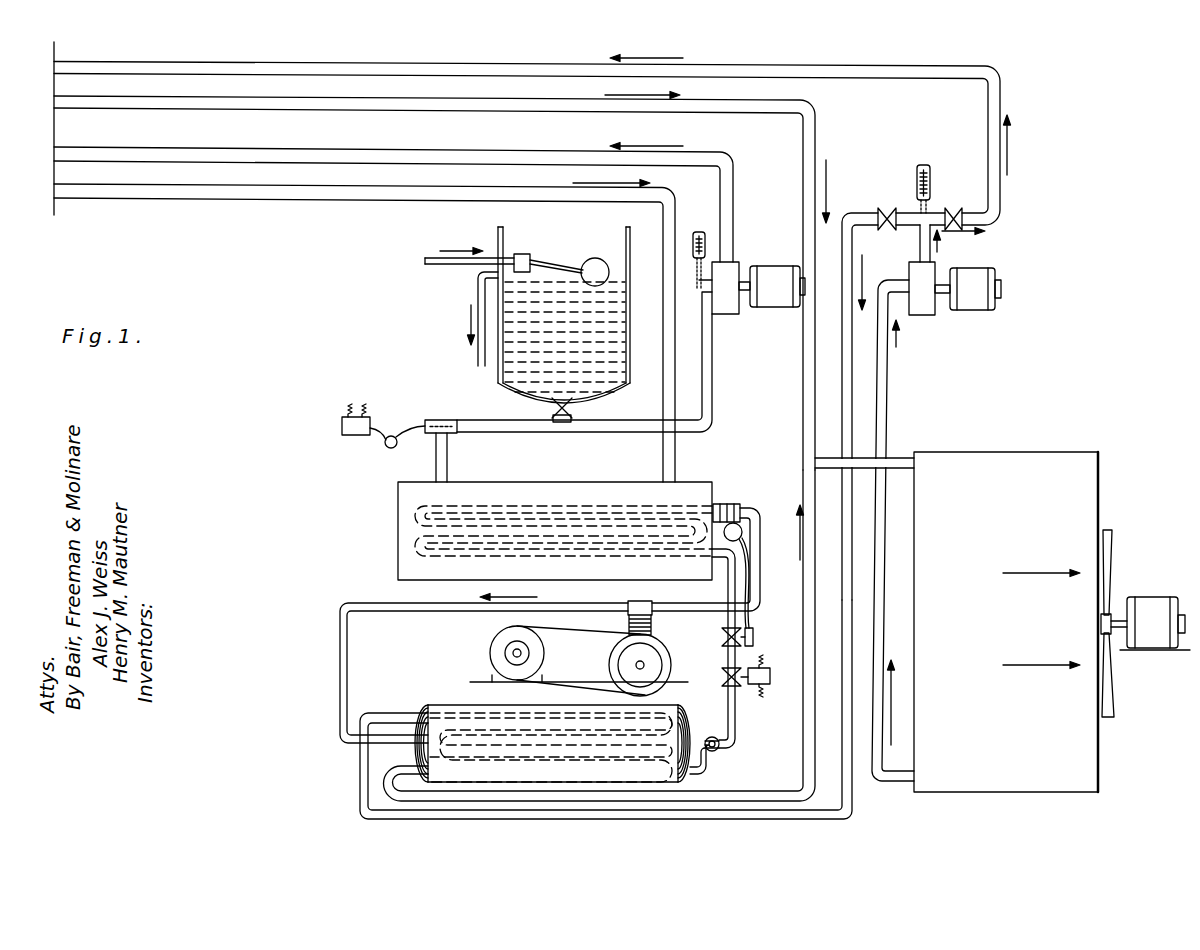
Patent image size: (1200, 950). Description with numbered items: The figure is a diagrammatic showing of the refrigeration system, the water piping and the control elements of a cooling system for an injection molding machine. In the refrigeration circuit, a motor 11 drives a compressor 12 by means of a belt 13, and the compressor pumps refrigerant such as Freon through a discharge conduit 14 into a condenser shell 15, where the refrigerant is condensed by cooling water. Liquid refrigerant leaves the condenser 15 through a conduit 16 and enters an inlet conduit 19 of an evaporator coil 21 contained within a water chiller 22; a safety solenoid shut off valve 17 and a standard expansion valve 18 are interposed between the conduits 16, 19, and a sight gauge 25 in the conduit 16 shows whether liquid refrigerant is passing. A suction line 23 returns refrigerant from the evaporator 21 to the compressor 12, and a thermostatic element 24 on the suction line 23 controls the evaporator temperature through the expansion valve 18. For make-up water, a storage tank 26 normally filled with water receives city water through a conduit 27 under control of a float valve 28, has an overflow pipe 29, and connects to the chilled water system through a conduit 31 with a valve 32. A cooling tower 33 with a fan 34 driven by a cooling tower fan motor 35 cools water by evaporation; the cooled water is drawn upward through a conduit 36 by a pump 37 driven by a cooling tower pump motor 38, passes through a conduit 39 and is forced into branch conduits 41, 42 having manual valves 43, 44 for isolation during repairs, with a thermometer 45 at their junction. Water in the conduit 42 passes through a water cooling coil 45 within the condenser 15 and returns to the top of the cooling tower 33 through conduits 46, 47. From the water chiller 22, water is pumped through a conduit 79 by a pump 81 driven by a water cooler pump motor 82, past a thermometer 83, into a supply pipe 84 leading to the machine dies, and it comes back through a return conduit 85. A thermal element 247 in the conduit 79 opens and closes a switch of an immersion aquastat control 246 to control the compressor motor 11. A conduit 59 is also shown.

The motor 11 is at (518, 630).
The compressor 12 is at (608, 652).
The belt 13 is at (604, 640).
The discharge conduit 14 is at (340, 655).
The condenser shell 15 is at (510, 714).
The conduit 16 is at (736, 744).
The safety solenoid shut off valve 17 is at (722, 680).
The expansion valve 18 is at (722, 640).
The inlet conduit 19 is at (728, 588).
The evaporator coil 21 is at (488, 558).
The water chiller 22 is at (398, 554).
The suction line 23 is at (760, 514).
The thermostatic element 24 is at (726, 504).
The sight gauge 25 is at (716, 736).
The storage tank 26 is at (498, 236).
The conduit 27 is at (460, 266).
The float valve 28 is at (552, 264).
The overflow pipe 29 is at (478, 300).
The conduit 31 is at (552, 403).
The valve 32 is at (572, 410).
The cooling tower 33 is at (1085, 478).
The fan 34 is at (1112, 540).
The cooling tower fan motor 35 is at (1160, 636).
The conduit 36 is at (886, 576).
The pump 37 is at (925, 320).
The cooling tower pump motor 38 is at (975, 300).
The conduit 39 is at (918, 248).
The branch conduit 41 is at (190, 62).
The branch conduit 42 is at (858, 212).
The manual valve 43 is at (954, 207).
The manual valve 44 is at (887, 208).
The thermometer 45 is at (924, 165).
The conduit 46 is at (803, 748).
The conduit 47 is at (897, 458).
The pipe 59 is at (205, 100).
The conduit 79 is at (702, 373).
The pump 81 is at (735, 316).
The water cooler pump motor 82 is at (778, 300).
The thermometer 83 is at (698, 232).
The supply pipe 84 is at (733, 216).
The return conduit 85 is at (690, 192).
The immersion aquastat control 246 is at (342, 430).
The thermal element 247 is at (460, 406).